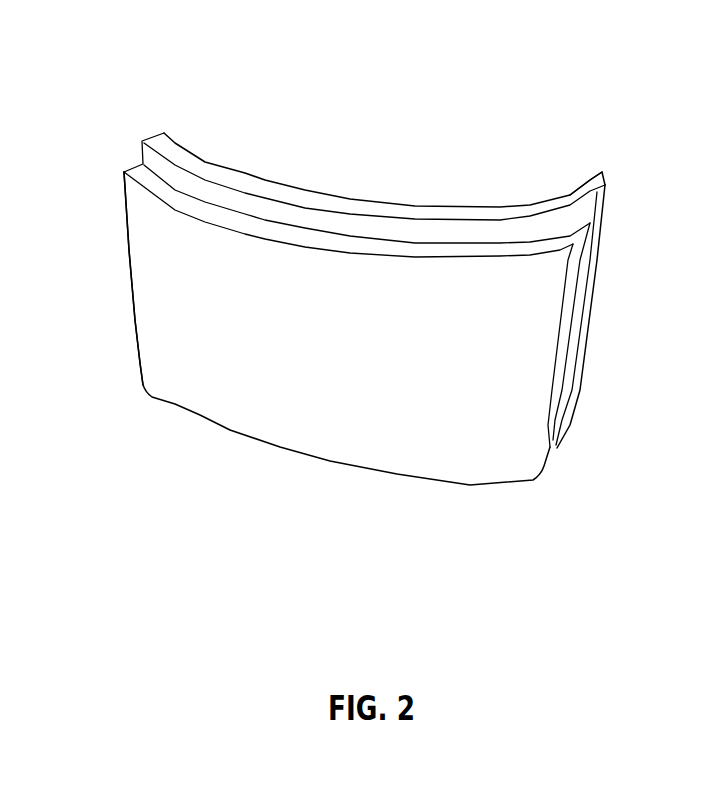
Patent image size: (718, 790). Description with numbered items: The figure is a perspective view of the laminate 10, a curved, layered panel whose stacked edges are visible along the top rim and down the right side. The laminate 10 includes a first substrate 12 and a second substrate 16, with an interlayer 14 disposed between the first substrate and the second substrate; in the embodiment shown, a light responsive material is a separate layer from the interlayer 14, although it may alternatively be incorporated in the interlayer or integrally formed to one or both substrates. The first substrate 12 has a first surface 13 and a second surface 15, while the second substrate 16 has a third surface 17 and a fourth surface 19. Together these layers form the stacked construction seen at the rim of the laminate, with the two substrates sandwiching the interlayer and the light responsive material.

The laminate 10 is at (273, 500).
The first substrate 12 is at (557, 452).
The first surface 13 is at (123, 230).
The interlayer 14 is at (197, 186).
The second surface 15 is at (282, 222).
The second substrate 16 is at (170, 131).
The third surface 17 is at (602, 172).
The fourth surface 19 is at (430, 207).